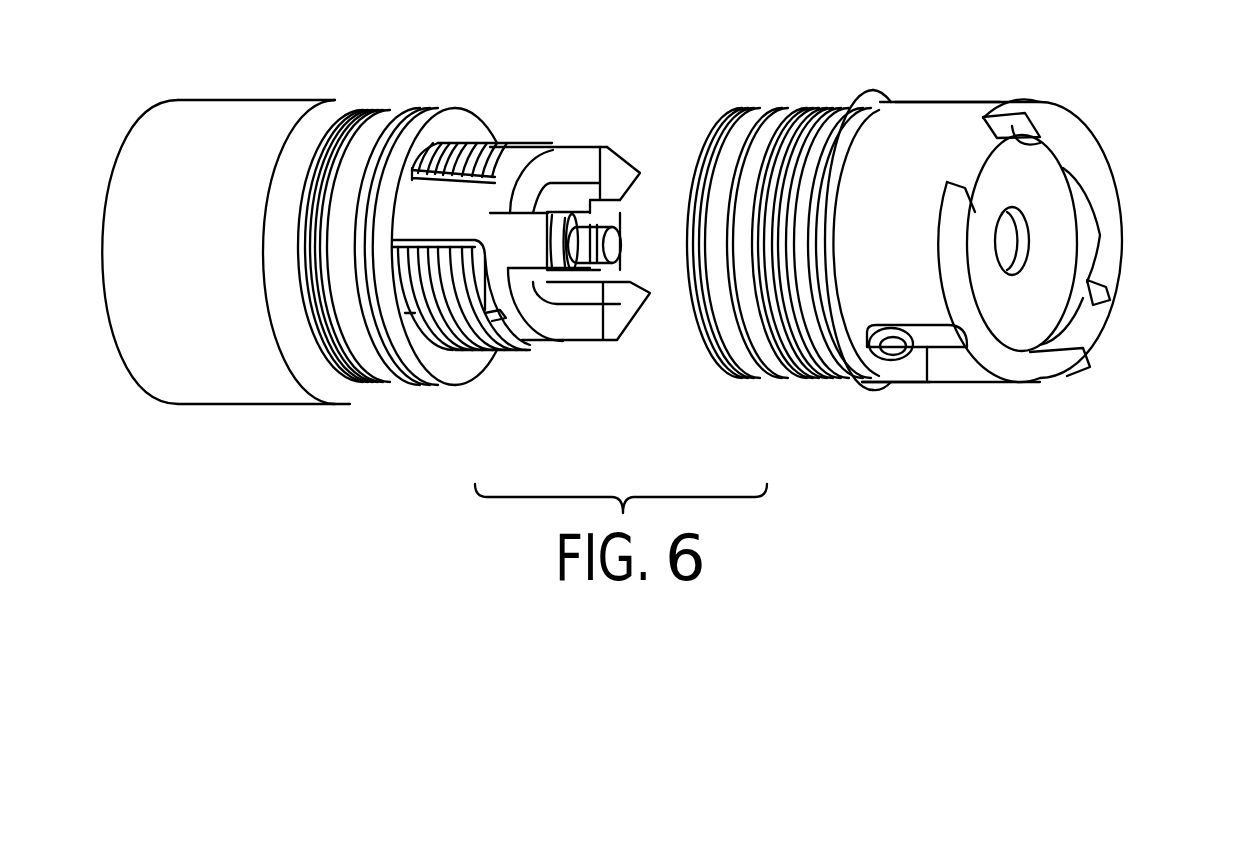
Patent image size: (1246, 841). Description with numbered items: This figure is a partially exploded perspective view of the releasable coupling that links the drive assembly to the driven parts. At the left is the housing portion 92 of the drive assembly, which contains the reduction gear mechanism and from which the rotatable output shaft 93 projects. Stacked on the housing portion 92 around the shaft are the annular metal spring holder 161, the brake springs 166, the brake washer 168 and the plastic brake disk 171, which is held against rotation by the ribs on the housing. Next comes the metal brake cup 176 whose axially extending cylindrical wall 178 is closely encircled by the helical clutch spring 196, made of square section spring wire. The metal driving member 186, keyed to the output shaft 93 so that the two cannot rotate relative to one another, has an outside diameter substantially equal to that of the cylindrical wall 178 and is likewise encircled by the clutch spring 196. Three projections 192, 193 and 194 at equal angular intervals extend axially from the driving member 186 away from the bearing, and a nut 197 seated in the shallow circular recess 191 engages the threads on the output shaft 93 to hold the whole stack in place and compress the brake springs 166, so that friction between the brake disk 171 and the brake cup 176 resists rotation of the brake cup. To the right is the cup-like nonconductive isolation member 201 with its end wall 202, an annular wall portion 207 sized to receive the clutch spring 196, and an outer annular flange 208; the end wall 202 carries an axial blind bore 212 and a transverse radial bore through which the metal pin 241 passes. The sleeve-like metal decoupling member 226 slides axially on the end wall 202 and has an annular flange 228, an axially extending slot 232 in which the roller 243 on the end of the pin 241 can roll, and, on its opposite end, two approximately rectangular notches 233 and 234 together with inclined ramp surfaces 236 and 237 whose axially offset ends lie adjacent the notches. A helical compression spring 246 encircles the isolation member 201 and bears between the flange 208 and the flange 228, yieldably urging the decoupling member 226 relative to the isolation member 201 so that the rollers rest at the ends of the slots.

The housing portion 92 is at (215, 378).
The spring holder 161 is at (330, 138).
The brake springs 166 is at (373, 112).
The brake washer 168 is at (387, 122).
The brake disk 171 is at (365, 337).
The brake cup 176 is at (393, 358).
The cylindrical wall 178 is at (423, 193).
The helical clutch spring 196 is at (505, 165).
The driving member 186 is at (515, 190).
The circular recess 191 is at (567, 197).
The projection 193 is at (620, 172).
The projection 192 is at (628, 308).
The projection 194 is at (530, 315).
The nut 197 is at (560, 273).
The output shaft 93 is at (613, 243).
The isolation member 201 is at (1065, 170).
The annular flange 208 is at (723, 135).
The wall portion 207 is at (728, 177).
The annular flange 228 is at (882, 136).
The decoupling member 226 is at (933, 137).
The ramp surface 236 is at (1107, 172).
The end wall 202 is at (1050, 298).
The blind bore 212 is at (1020, 245).
The notch 234 is at (1035, 137).
The notch 233 is at (1110, 300).
The ramp surface 237 is at (1030, 352).
The slot 232 is at (947, 352).
The roller 243 is at (925, 352).
The pin 241 is at (888, 355).
The compression spring 246 is at (818, 380).